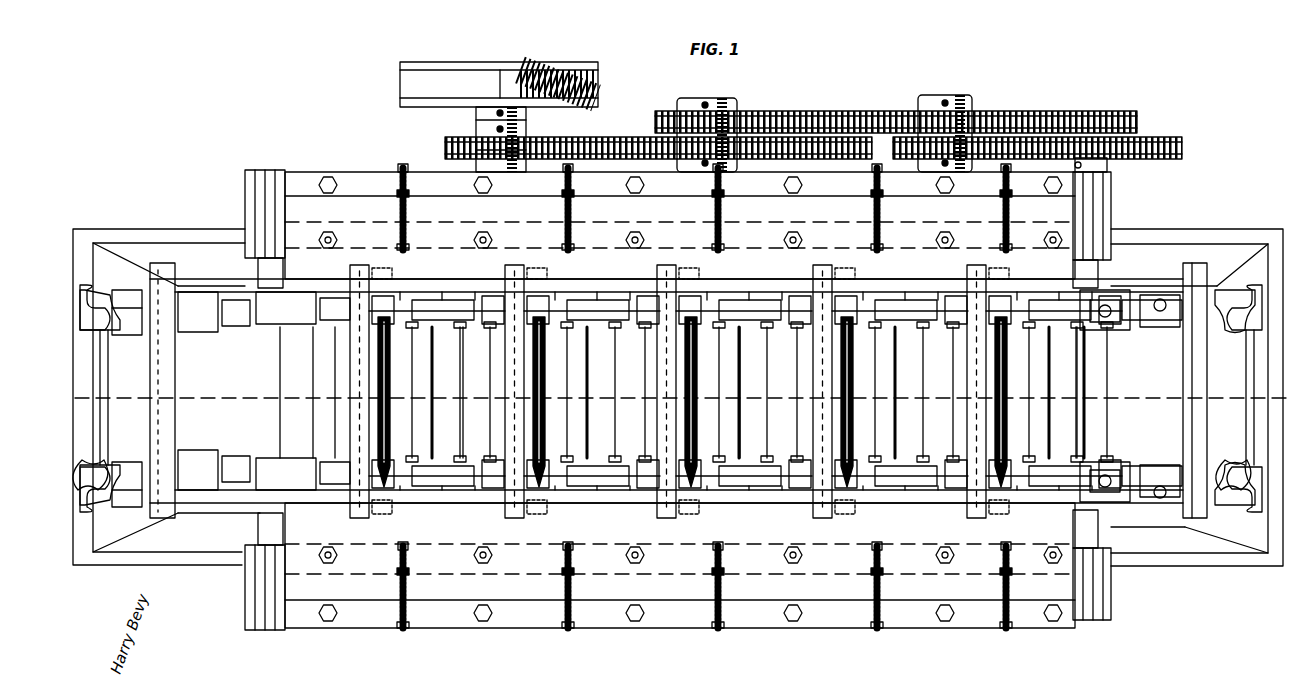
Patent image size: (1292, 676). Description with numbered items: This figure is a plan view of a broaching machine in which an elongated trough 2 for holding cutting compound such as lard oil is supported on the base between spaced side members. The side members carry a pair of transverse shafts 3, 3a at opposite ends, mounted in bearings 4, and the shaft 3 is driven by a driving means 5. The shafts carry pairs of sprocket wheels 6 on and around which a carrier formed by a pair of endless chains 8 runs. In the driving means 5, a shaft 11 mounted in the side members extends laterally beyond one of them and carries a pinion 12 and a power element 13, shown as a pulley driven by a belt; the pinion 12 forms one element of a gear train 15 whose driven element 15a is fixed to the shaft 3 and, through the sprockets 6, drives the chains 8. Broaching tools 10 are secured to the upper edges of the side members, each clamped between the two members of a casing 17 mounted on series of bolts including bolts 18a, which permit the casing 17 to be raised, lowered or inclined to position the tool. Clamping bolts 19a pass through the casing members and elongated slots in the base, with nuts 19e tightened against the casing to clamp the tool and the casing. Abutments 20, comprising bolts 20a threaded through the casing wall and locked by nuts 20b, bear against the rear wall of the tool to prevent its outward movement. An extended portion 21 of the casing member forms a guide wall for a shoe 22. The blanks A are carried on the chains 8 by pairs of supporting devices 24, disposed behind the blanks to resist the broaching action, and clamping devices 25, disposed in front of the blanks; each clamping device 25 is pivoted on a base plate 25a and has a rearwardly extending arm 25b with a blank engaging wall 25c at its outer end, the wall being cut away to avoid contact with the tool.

The trough 2 is at (172, 229).
The transverse shaft 3 is at (1088, 378).
The transverse shaft 3a is at (276, 380).
The bearing 4 is at (245, 212).
The driving means 5 is at (896, 131).
The sprocket wheel 6 is at (1107, 300).
The endless chain 8 is at (790, 466).
The broaching tool 10 is at (600, 285).
The shaft 11 is at (495, 374).
The pinion 12 is at (450, 150).
The power element 13 is at (496, 70).
The gear train 15 is at (658, 138).
The driven element 15a is at (1150, 158).
The casing 17 is at (680, 400).
The bolt 18a is at (808, 638).
The bolt 19a is at (340, 238).
The nut 19e is at (493, 240).
The abutment 20 is at (1006, 632).
The bolt 20a is at (725, 645).
The nut 20b is at (574, 180).
The extended portion 21 is at (720, 280).
The shoe 22 is at (98, 283).
The supporting device 24 is at (78, 380).
The clamping device 25 is at (1236, 474).
The base plate 25a is at (760, 468).
The arm 25b is at (108, 468).
The blank engaging wall 25c is at (880, 515).
The blank A is at (384, 392).